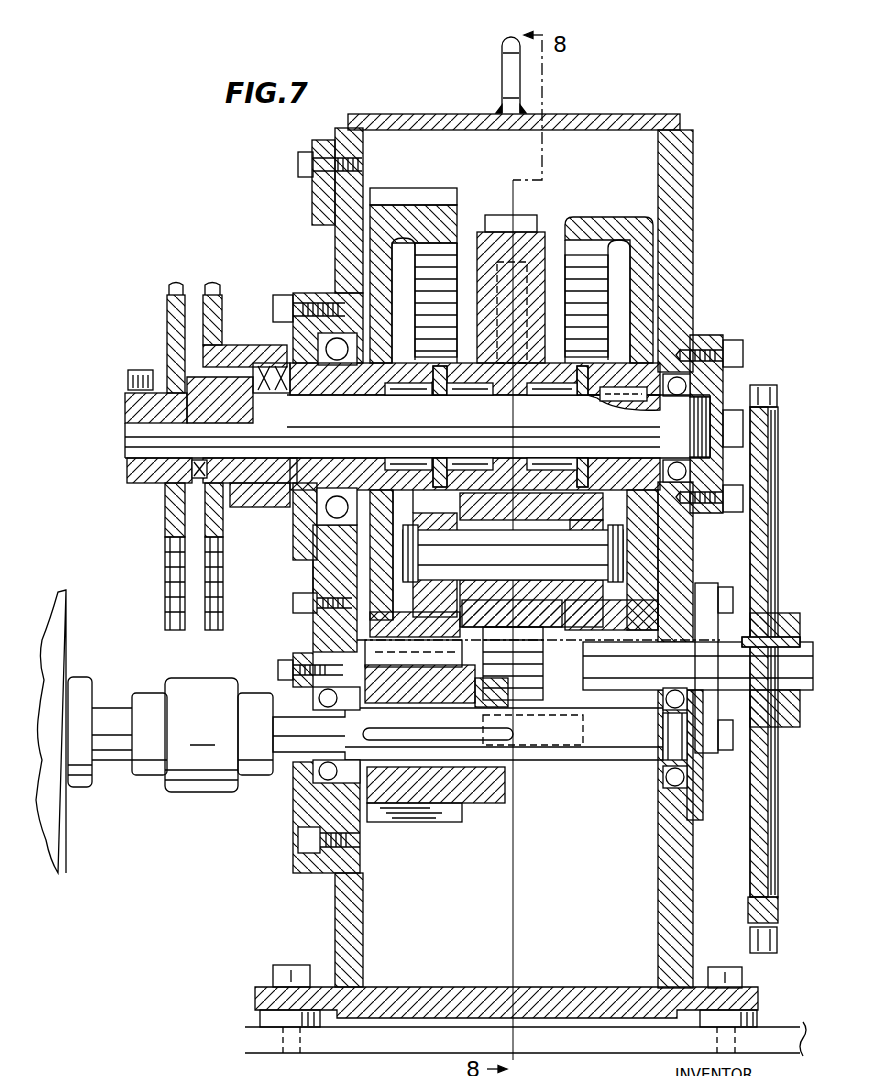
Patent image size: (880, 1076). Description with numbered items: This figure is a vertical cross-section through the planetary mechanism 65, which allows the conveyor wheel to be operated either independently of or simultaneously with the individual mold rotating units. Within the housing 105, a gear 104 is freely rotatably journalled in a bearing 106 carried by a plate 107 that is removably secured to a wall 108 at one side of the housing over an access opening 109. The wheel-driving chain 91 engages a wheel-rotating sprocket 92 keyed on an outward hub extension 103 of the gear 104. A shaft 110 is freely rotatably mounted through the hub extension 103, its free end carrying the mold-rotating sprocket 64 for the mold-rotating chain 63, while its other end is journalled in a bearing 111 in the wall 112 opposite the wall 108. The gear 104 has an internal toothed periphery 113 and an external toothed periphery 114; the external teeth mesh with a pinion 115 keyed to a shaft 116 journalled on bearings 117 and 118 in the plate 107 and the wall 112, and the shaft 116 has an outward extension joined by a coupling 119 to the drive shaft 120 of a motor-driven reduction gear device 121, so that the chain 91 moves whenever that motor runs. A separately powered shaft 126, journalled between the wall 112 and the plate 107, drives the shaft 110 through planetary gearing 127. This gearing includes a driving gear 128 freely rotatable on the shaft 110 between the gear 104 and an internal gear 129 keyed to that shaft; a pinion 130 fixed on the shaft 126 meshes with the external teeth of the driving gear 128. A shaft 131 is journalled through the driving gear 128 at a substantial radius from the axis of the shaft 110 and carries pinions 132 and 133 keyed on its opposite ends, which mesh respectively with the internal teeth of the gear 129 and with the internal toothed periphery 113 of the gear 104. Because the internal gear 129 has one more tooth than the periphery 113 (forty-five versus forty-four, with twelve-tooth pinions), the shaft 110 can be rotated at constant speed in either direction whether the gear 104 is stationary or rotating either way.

The planetary mechanism 65 is at (695, 202).
The housing 105 is at (656, 116).
The access opening 109 is at (354, 186).
The external toothed periphery 114 is at (413, 189).
The gear 104 is at (458, 197).
The internal toothed periphery 113 is at (456, 248).
The driving gear 128 is at (537, 218).
The internal gear 129 is at (606, 248).
The wall 112 is at (693, 326).
The bearing 111 is at (728, 360).
The mold-rotating sprocket 64 is at (168, 341).
The hub extension 103 is at (272, 383).
The bearing 106 is at (332, 384).
The shaft 110 is at (128, 448).
The wheel-rotating sprocket 92 is at (222, 528).
The mold-rotating chain 63 is at (168, 577).
The wheel-driving chain 91 is at (223, 584).
The pinion 132 is at (420, 601).
The plate 107 is at (320, 630).
The pinion 133 is at (602, 512).
The planetary gearing 127 is at (628, 567).
The shaft 131 is at (522, 560).
The coupling 119 is at (186, 676).
The drive shaft 120 is at (118, 708).
The pinion 130 is at (549, 690).
The shaft 126 is at (735, 706).
The shaft 116 is at (600, 767).
The bearing 118 is at (664, 779).
The bearing 117 is at (304, 788).
The reduction gear device 121 is at (67, 843).
The pinion 115 is at (440, 826).
The wall 108 is at (340, 897).